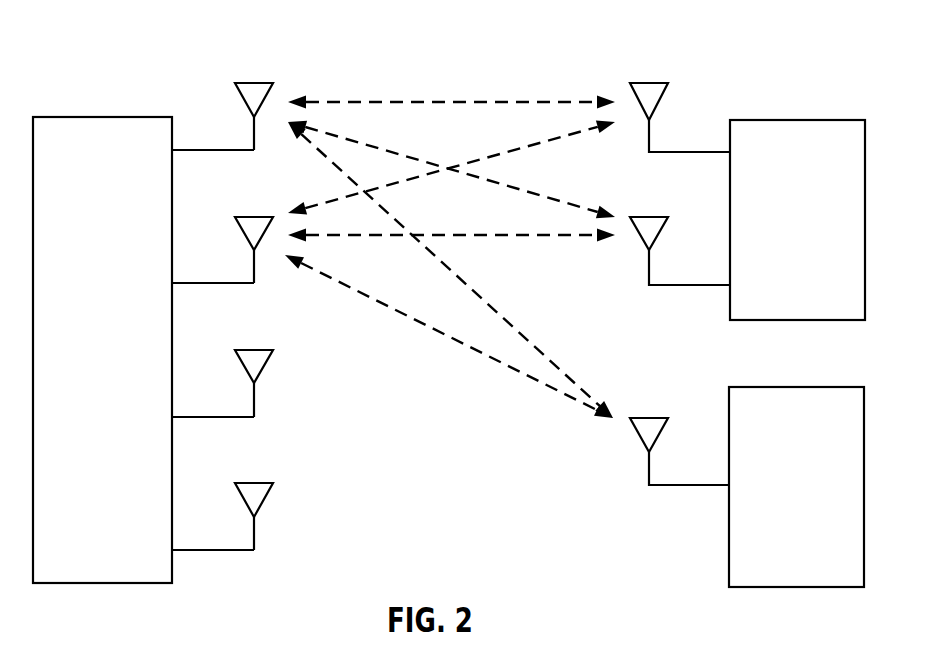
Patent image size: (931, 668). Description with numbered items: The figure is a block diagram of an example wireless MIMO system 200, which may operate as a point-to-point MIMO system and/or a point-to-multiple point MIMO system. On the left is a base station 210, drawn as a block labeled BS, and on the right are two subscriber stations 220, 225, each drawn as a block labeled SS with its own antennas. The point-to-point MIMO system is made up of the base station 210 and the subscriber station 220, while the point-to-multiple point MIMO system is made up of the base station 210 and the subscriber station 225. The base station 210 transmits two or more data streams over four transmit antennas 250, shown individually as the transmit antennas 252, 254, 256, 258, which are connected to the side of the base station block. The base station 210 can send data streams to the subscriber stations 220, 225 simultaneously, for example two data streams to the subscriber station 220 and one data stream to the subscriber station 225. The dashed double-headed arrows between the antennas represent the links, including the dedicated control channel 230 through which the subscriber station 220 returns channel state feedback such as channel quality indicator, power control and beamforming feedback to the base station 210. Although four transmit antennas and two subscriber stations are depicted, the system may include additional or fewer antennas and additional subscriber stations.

The wireless MIMO system 200 is at (95, 39).
The base station 210 is at (100, 117).
The subscriber station 220 is at (800, 120).
The subscriber station 225 is at (800, 387).
The control channel 230 is at (455, 75).
The transmit antennas 250 is at (255, 56).
The transmit antenna 252 is at (200, 150).
The transmit antenna 254 is at (203, 283).
The transmit antenna 256 is at (203, 417).
The transmit antenna 258 is at (203, 550).